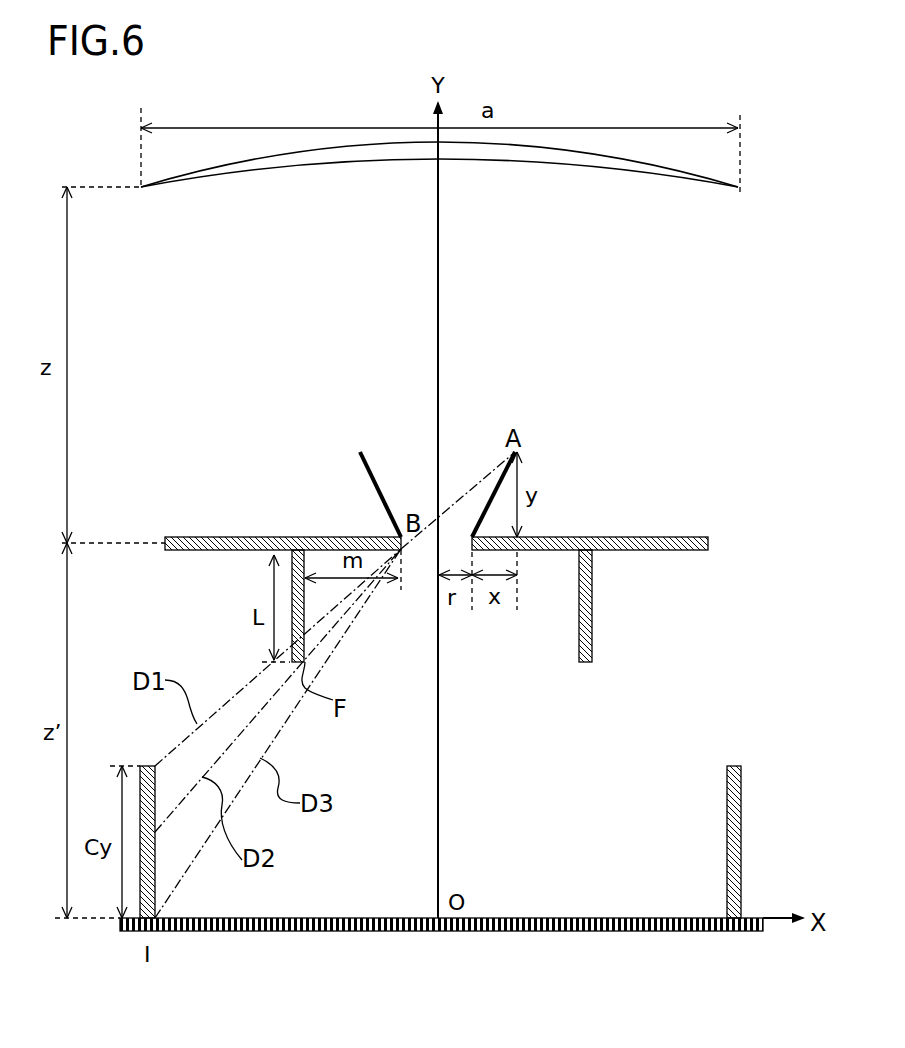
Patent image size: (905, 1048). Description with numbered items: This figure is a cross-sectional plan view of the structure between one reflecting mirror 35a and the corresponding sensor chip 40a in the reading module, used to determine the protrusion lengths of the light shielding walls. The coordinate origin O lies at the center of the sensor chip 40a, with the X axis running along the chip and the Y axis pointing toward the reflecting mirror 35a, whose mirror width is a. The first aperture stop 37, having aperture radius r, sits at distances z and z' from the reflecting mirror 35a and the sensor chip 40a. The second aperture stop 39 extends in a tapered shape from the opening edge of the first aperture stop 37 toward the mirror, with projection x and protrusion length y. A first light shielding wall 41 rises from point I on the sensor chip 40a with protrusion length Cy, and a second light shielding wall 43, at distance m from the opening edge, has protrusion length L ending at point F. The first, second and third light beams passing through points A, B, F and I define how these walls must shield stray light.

The reflecting mirror 35a is at (615, 168).
The first aperture stop 37 is at (401, 550).
The second aperture stop 39 is at (371, 481).
The sensor chip 40a is at (306, 932).
The first light shielding wall 41 is at (147, 766).
The second light shielding wall 43 is at (292, 592).